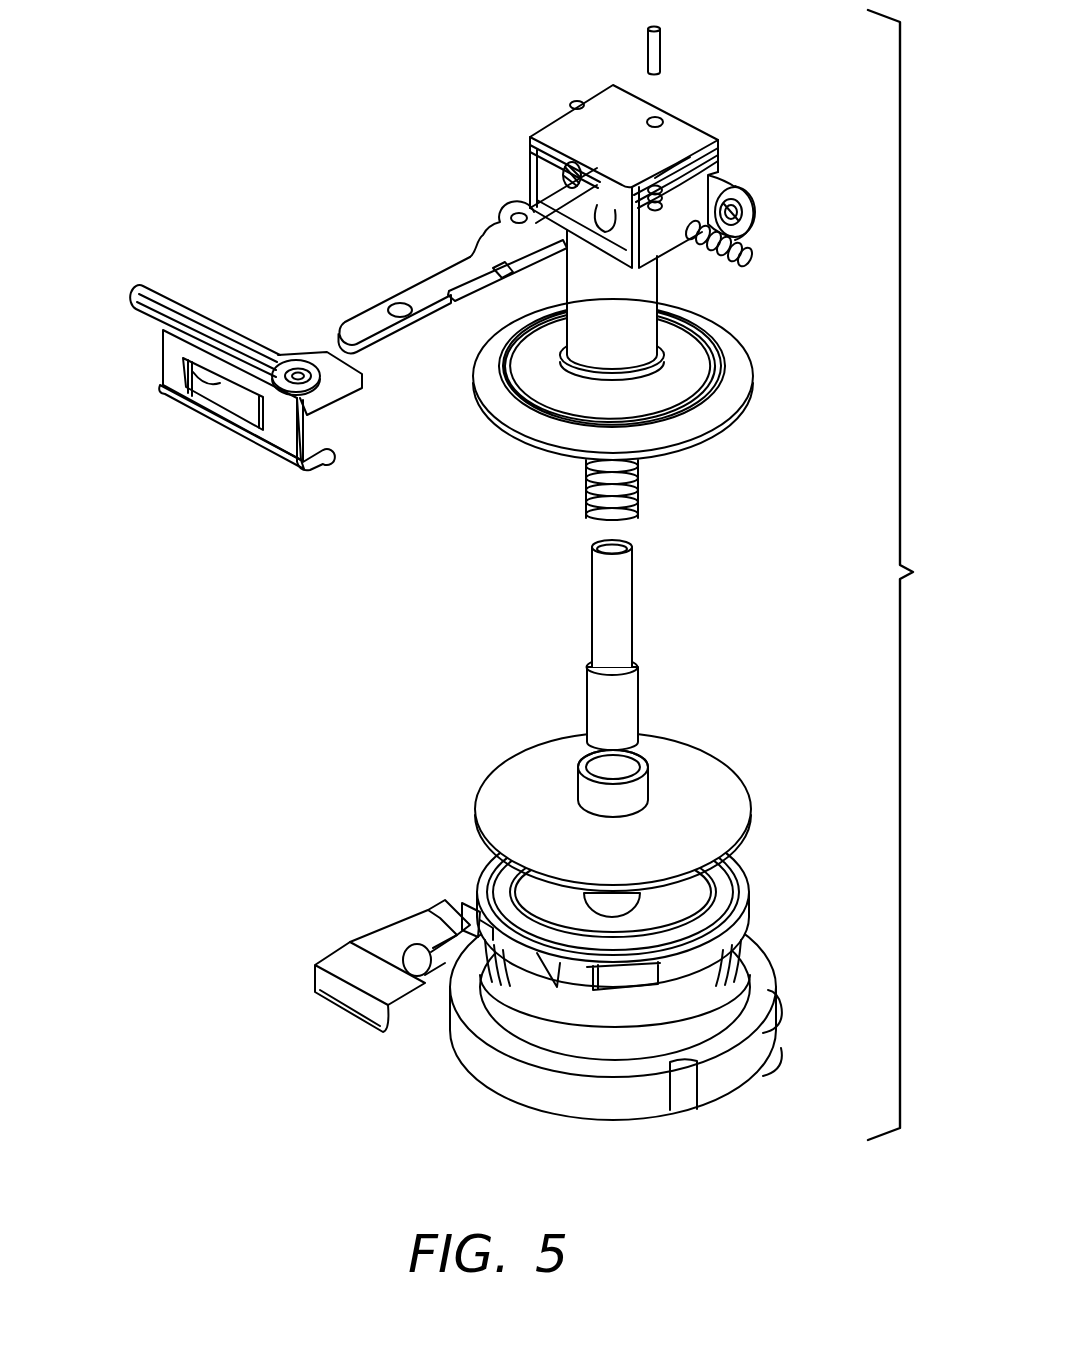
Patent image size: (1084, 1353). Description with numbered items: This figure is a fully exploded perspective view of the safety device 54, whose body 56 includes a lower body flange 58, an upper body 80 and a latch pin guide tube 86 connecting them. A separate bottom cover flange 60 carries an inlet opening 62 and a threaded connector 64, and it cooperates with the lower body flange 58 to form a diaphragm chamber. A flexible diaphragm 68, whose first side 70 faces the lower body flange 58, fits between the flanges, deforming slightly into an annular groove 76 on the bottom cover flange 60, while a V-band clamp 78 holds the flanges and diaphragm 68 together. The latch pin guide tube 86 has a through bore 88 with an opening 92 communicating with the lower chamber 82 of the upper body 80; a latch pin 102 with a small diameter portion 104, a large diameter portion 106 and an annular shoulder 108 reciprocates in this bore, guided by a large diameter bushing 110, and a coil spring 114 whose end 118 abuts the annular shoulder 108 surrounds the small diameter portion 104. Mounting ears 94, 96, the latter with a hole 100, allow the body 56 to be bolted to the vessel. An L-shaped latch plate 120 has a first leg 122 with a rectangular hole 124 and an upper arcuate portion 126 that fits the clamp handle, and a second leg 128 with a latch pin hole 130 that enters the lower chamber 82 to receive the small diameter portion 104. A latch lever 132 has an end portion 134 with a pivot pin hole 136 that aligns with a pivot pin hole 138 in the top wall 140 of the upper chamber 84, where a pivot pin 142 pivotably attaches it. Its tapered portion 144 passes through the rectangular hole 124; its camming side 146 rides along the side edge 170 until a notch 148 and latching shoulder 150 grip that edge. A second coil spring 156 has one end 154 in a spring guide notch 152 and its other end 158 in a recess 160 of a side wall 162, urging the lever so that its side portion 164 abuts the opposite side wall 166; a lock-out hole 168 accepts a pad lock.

The safety device 54 is at (912, 575).
The body 56 is at (802, 298).
The lower body flange 58 is at (620, 381).
The bottom cover flange 60 is at (641, 929).
The inlet opening 62 is at (613, 905).
The threaded connector 64 is at (623, 975).
The flexible diaphragm 68 is at (648, 812).
The first side 70 is at (648, 848).
The annular groove 76 is at (750, 867).
The V-band clamp 78 is at (488, 1063).
The upper body 80 is at (626, 154).
The lower chamber 82 is at (657, 258).
The upper chamber 84 is at (678, 128).
The latch pin guide tube 86 is at (590, 332).
The through bore 88 is at (603, 180).
The opening 92 is at (718, 320).
The mounting ear 94 is at (578, 101).
The mounting ear 96 is at (716, 188).
The hole 100 is at (756, 208).
The latch pin 102 is at (611, 678).
The small diameter portion 104 is at (604, 577).
The large diameter portion 106 is at (603, 712).
The annular shoulder 108 is at (592, 663).
The large diameter bushing 110 is at (637, 787).
The coil spring 114 is at (641, 470).
The end of coil spring 118 is at (590, 508).
The L-shaped latch plate 120 is at (237, 384).
The first leg 122 is at (172, 349).
The rectangular hole 124 is at (200, 370).
The upper arcuate portion 126 is at (275, 358).
The second leg 128 is at (352, 380).
The latch pin hole 130 is at (306, 368).
The latch lever 132 is at (440, 279).
The end portion 134 is at (470, 257).
The pivot pin hole 136 is at (518, 210).
The pivot pin hole 138 is at (656, 117).
The top wall 140 is at (698, 128).
The pivot pin 142 is at (662, 50).
The tapered portion 144 is at (357, 322).
The camming side 146 is at (382, 342).
The notch 148 is at (470, 297).
The latching shoulder 150 is at (462, 302).
The spring guide notch 152 is at (467, 254).
The end of second coil spring 154 is at (742, 245).
The second coil spring 156 is at (708, 254).
The end of second coil spring 158 is at (660, 232).
The recess 160 is at (567, 172).
The side wall 162 is at (600, 170).
The side portion 164 is at (536, 257).
The opposite side wall 166 is at (719, 152).
The lock-out hole 168 is at (391, 305).
The side edge 170 is at (250, 407).